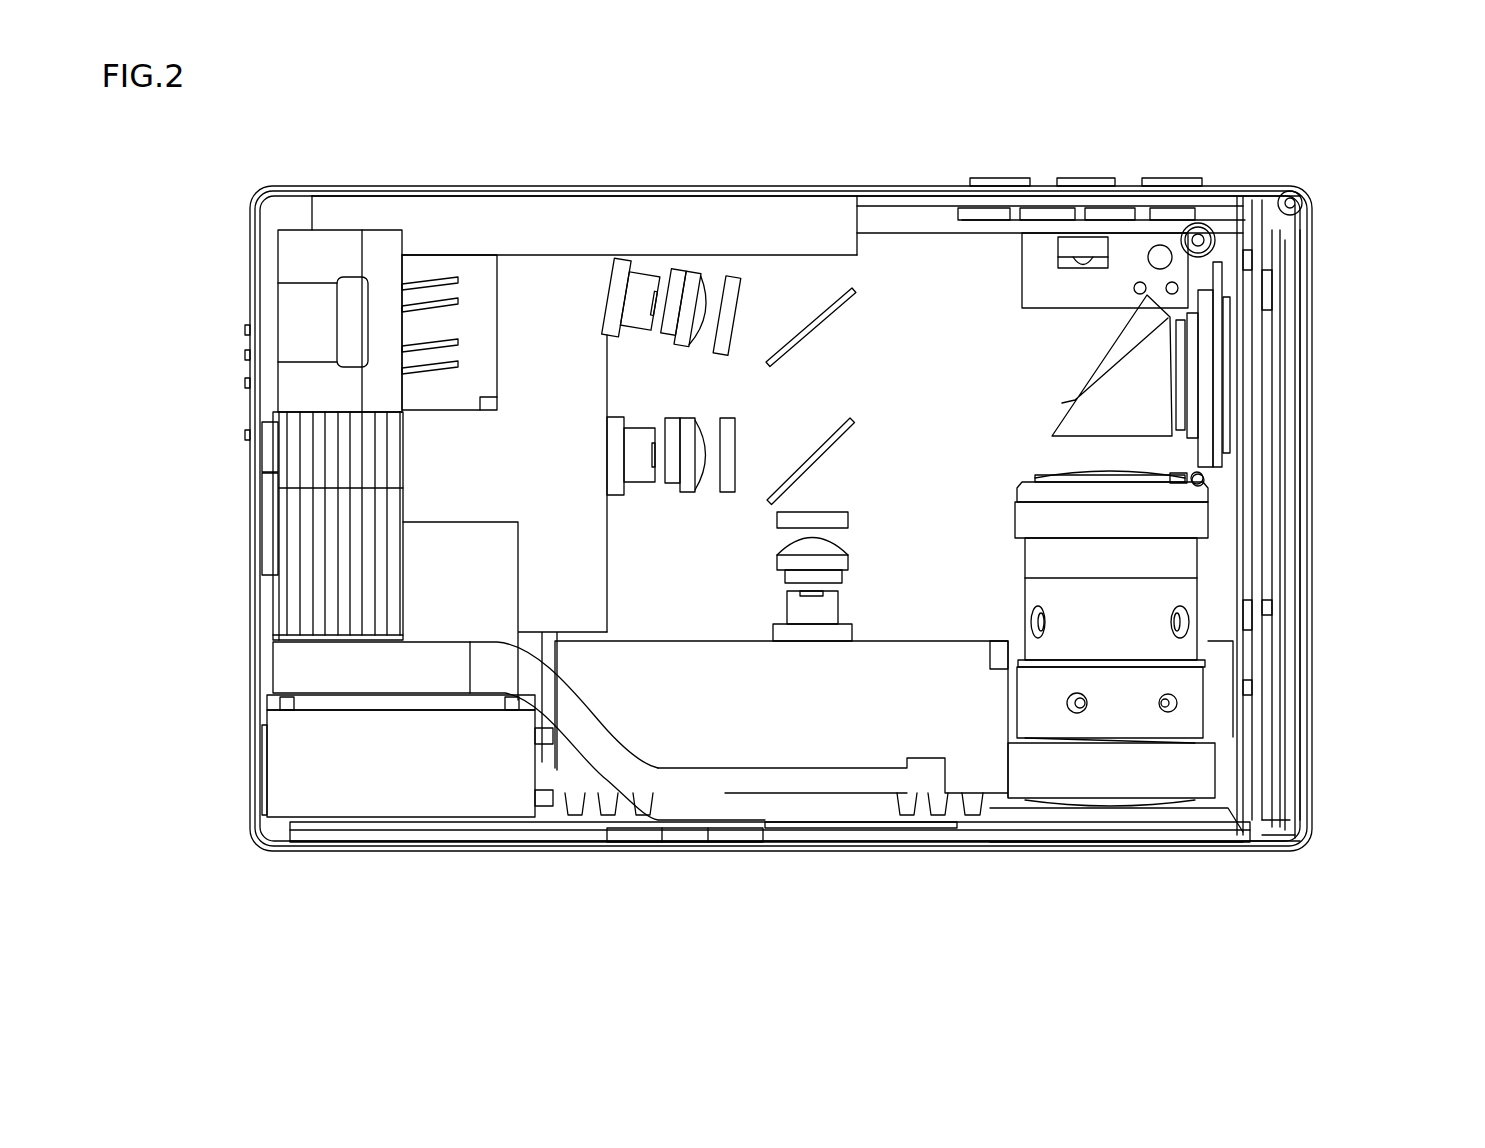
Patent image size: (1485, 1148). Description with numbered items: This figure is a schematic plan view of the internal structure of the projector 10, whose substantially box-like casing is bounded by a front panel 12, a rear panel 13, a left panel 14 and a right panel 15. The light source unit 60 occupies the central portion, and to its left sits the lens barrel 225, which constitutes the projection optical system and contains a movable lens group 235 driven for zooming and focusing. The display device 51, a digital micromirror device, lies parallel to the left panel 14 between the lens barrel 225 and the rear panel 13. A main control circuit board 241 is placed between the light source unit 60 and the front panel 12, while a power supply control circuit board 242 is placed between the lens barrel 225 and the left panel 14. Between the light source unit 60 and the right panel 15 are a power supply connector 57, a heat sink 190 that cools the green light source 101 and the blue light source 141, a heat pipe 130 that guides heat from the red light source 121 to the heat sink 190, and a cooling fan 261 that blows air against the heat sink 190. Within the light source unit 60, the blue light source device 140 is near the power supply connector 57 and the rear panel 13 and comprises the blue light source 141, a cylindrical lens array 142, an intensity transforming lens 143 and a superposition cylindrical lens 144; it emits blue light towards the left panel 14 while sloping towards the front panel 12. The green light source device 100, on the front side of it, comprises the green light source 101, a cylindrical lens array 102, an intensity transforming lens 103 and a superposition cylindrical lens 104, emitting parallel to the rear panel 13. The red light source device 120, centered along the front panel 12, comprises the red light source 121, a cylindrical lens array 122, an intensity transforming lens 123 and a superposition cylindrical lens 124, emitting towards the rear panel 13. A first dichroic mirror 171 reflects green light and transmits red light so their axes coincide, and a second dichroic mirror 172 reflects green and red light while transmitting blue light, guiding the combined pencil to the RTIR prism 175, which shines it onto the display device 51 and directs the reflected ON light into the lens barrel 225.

The projector 10 is at (1380, 188).
The front panel 12 is at (340, 850).
The rear panel 13 is at (357, 186).
The left panel 14 is at (1310, 423).
The right panel 15 is at (258, 481).
The display device 51 is at (1193, 337).
The power supply connector 57 is at (310, 255).
The light source unit 60 is at (741, 550).
The green light source device 100 is at (581, 430).
The green light source 101 is at (617, 483).
The cylindrical lens array 102 is at (672, 437).
The intensity transforming lens 103 is at (688, 483).
The superposition cylindrical lens 104 is at (732, 430).
The red light source device 120 is at (821, 663).
The red light source 121 is at (838, 632).
The cylindrical lens array 122 is at (830, 577).
The intensity transforming lens 123 is at (840, 563).
The superposition cylindrical lens 124 is at (840, 520).
The heat pipe 130 is at (300, 667).
The blue light source device 140 is at (669, 196).
The blue light source 141 is at (625, 270).
The cylindrical lens array 142 is at (678, 287).
The intensity transforming lens 143 is at (697, 285).
The superposition cylindrical lens 144 is at (737, 290).
The first dichroic mirror 171 is at (833, 438).
The second dichroic mirror 172 is at (820, 307).
The RTIR prism 175 is at (1128, 333).
The heat sink 190 is at (445, 485).
The lens barrel 225 is at (1140, 768).
The movable lens group 235 is at (1170, 598).
The main control circuit board 241 is at (990, 775).
The power supply control circuit board 242 is at (1273, 695).
The cooling fan 261 is at (330, 765).